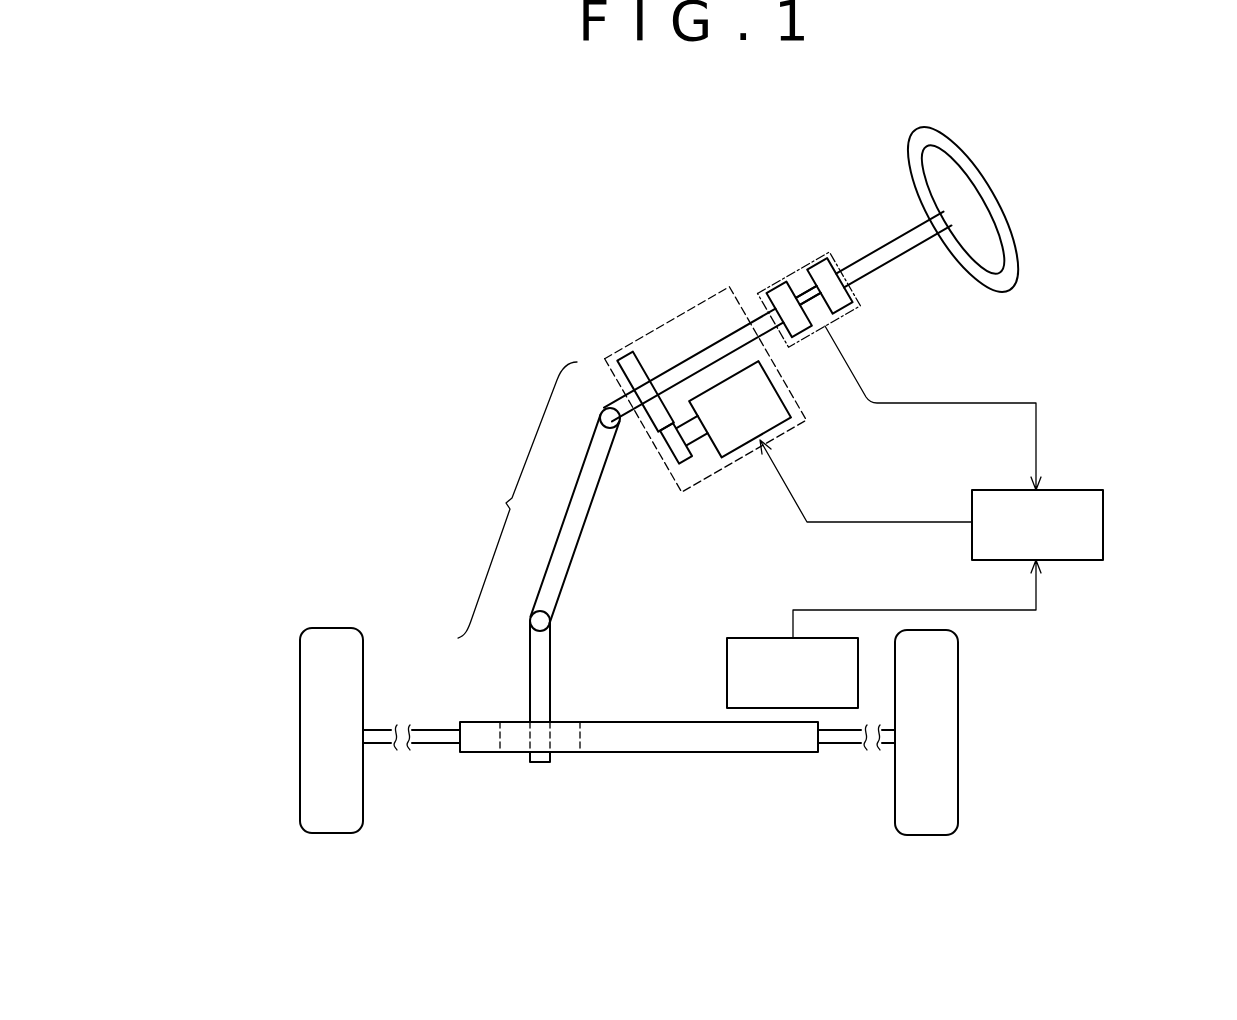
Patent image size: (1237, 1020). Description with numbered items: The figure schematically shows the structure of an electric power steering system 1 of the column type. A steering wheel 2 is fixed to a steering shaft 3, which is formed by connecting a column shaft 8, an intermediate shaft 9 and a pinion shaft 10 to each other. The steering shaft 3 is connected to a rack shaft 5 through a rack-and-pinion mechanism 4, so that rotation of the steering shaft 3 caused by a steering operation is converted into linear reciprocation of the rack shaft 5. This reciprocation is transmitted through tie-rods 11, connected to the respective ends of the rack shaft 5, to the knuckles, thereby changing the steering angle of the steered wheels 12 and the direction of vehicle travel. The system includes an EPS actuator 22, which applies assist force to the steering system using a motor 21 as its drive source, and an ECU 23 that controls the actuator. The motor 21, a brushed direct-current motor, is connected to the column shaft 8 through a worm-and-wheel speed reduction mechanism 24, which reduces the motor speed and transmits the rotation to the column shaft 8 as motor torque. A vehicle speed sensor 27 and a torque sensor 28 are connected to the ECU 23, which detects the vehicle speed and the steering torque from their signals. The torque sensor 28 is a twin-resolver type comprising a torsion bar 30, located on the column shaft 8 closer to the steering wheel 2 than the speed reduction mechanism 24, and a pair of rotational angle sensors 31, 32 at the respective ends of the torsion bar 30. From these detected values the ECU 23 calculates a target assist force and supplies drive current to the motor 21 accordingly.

The electric power steering system 1 is at (436, 142).
The steering wheel 2 is at (996, 192).
The steering shaft 3 is at (704, 425).
The rack-and-pinion mechanism 4 is at (565, 730).
The rack shaft 5 is at (640, 722).
The column shaft 8 is at (614, 400).
The intermediate shaft 9 is at (566, 507).
The pinion shaft 10 is at (530, 655).
The tie-rods 11 is at (432, 730).
The steered wheels 12 is at (300, 668).
The motor 21 is at (752, 425).
The EPS actuator 22 is at (672, 319).
The ECU 23 is at (1104, 523).
The speed reduction mechanism 24 is at (668, 452).
The vehicle speed sensor 27 is at (750, 638).
The torque sensor 28 is at (835, 258).
The torsion bar 30 is at (787, 285).
The rotational angle sensor 31 is at (816, 266).
The rotational angle sensor 32 is at (768, 292).